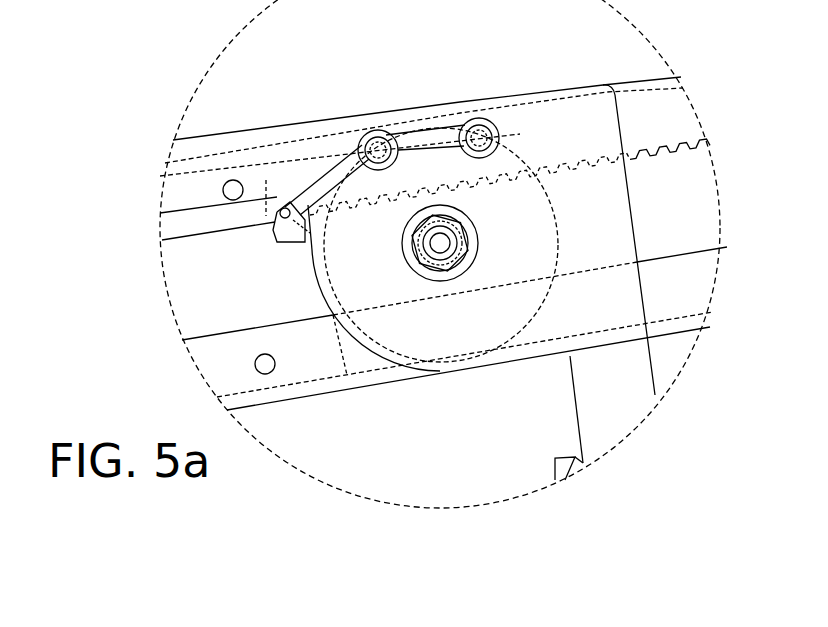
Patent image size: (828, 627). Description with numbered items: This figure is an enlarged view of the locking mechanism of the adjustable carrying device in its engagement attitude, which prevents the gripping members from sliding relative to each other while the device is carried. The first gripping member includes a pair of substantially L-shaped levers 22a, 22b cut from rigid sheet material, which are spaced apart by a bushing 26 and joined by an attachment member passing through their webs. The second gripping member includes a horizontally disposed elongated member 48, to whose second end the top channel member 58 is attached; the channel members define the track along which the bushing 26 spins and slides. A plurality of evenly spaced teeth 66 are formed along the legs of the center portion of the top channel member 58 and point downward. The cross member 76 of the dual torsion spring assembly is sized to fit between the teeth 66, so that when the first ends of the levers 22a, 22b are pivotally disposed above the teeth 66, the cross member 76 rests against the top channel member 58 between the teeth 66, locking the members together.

The lever 22a is at (173, 138).
The lever 22b is at (397, 110).
The bushing 26 is at (457, 350).
The elongated member 48 is at (178, 316).
The top channel member 58 is at (158, 233).
The teeth 66 is at (683, 152).
The cross member 76 is at (278, 241).